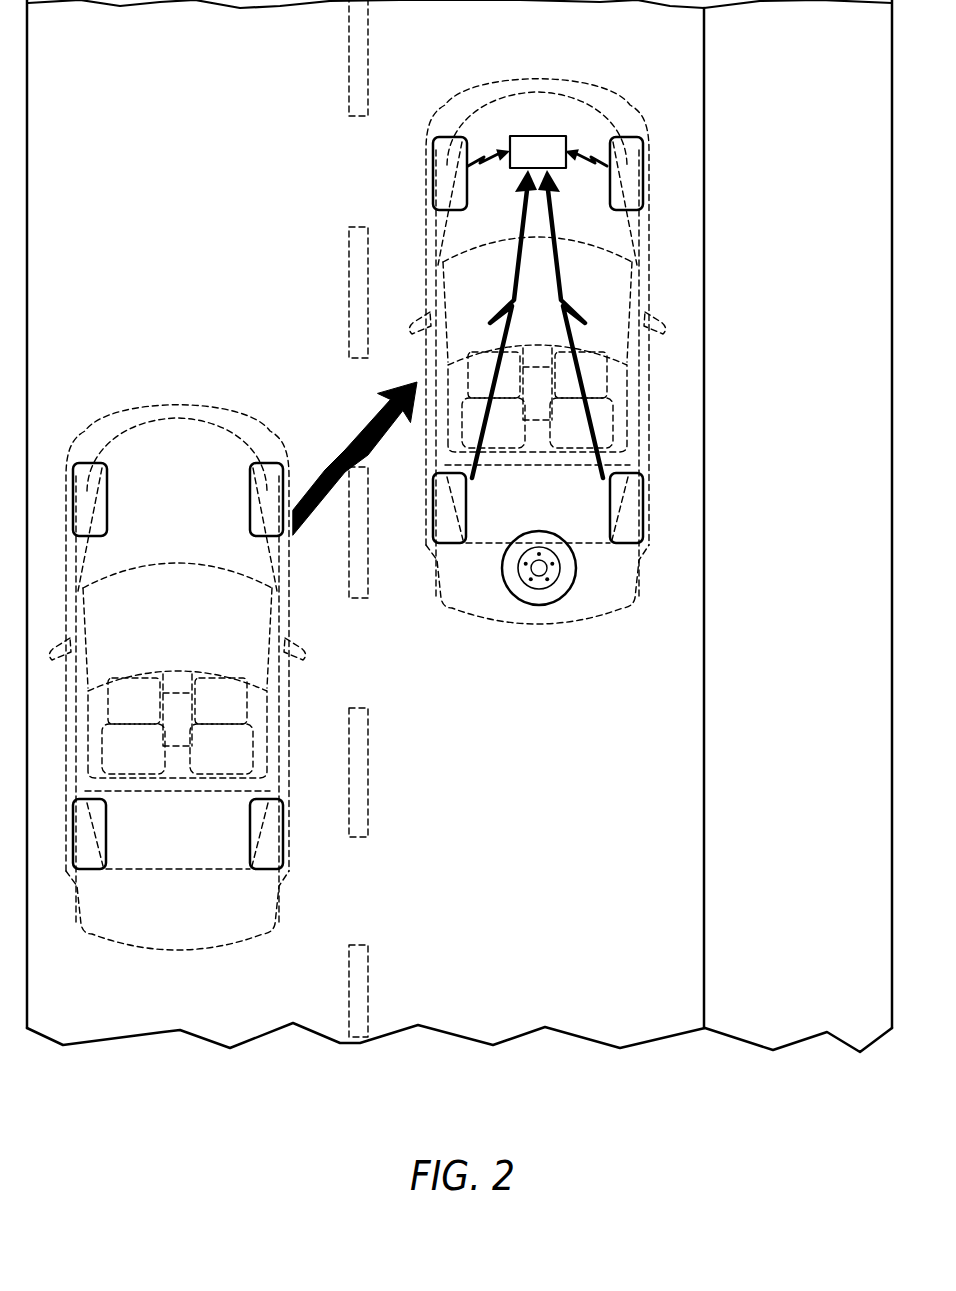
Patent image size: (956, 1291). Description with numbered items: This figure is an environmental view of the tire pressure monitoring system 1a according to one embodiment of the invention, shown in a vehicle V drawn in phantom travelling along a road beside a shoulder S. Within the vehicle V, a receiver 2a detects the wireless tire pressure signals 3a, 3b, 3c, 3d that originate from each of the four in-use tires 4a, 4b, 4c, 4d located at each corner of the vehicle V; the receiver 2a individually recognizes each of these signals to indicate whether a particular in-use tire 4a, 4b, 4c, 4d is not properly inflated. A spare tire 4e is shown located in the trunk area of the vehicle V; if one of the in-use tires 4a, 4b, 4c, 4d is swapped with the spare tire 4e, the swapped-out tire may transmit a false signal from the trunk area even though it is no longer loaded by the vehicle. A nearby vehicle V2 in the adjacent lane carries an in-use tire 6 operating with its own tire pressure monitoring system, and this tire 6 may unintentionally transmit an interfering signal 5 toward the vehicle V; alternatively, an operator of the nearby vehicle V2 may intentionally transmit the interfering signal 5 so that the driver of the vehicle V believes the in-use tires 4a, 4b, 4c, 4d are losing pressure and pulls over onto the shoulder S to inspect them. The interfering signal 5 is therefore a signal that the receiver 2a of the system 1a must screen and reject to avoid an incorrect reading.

The tire pressure monitoring system 1a is at (553, 135).
The receiver 2a is at (523, 134).
The wireless tire pressure signal 3a is at (479, 152).
The wireless tire pressure signal 3b is at (597, 152).
The wireless tire pressure signal 3c is at (590, 430).
The wireless tire pressure signal 3d is at (485, 430).
The in-use tire 4a is at (433, 180).
The in-use tire 4b is at (644, 180).
The in-use tire 4c is at (644, 515).
The in-use tire 4d is at (433, 515).
The spare tire 4e is at (547, 605).
The interfering signal 5 is at (350, 437).
The in-use tire 6 is at (250, 514).
The vehicle V is at (430, 288).
The nearby vehicle V2 is at (155, 403).
The shoulder S is at (704, 753).